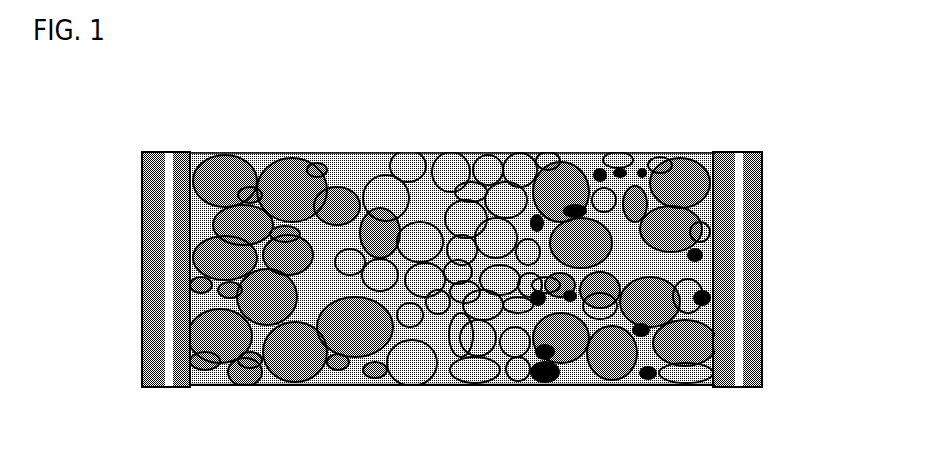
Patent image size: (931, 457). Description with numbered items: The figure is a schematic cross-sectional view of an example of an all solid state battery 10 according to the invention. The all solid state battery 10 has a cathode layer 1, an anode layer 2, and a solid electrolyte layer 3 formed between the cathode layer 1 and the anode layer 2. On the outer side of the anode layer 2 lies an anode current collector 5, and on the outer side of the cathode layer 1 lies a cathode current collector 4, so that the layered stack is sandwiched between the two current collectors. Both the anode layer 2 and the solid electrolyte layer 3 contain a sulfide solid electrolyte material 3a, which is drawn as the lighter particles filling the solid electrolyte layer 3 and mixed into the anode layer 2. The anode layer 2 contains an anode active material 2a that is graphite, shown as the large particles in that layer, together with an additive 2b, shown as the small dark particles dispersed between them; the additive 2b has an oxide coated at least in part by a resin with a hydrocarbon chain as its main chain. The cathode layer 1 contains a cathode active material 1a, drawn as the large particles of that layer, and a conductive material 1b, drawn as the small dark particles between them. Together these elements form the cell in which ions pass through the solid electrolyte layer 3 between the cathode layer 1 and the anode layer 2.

The all solid state battery 10 is at (756, 96).
The anode current collector 5 is at (164, 166).
The cathode current collector 4 is at (730, 150).
The anode layer 2 is at (335, 139).
The solid electrolyte layer 3 is at (538, 139).
The cathode layer 1 is at (700, 139).
The anode active material 2a is at (281, 385).
The additive 2b is at (340, 385).
The sulfide solid electrolyte material 3a is at (415, 368).
The cathode active material 1a is at (609, 383).
The conductive material 1b is at (548, 385).